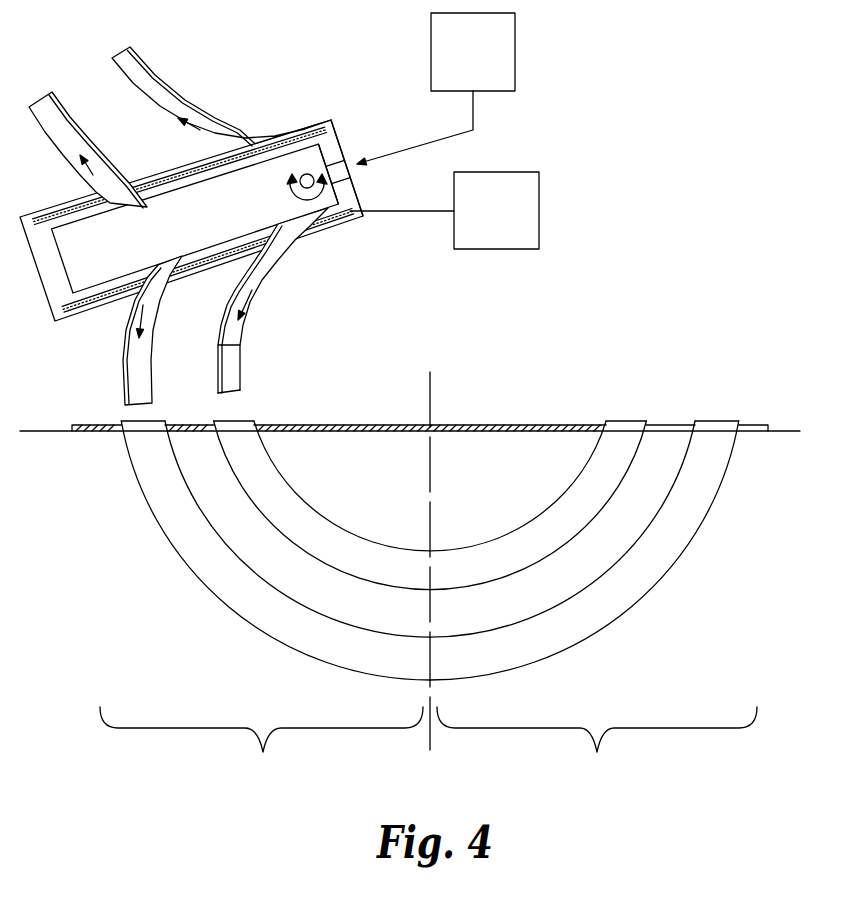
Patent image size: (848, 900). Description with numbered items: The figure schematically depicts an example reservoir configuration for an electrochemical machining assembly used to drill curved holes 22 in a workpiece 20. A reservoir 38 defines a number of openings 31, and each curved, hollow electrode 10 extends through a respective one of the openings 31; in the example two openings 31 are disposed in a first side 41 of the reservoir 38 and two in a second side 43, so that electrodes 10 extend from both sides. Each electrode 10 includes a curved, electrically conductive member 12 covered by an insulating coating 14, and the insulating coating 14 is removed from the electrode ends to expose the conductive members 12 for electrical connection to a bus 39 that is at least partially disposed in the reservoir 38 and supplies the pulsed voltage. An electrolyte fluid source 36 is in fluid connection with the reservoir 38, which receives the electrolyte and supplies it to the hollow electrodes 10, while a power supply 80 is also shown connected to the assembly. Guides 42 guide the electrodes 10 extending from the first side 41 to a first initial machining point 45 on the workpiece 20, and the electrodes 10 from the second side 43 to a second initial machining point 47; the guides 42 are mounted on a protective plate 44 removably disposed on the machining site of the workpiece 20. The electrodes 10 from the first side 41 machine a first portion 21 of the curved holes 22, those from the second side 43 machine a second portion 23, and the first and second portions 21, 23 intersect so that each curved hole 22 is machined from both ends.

The curved electrode 10 is at (270, 322).
The curved, electrically conductive member 12 is at (225, 393).
The insulating coating 14 is at (243, 343).
The workpiece 20 is at (410, 561).
The first portion of curved hole 21 is at (261, 746).
The curved hole 22 is at (706, 497).
The second portion of curved hole 23 is at (597, 746).
The openings 31 is at (218, 137).
The electrolyte fluid source 36 is at (436, 89).
The reservoir 38 is at (336, 123).
The bus 39 is at (340, 222).
The first side of reservoir 41 is at (308, 238).
The guide 42 is at (722, 423).
The second side of reservoir 43 is at (176, 168).
The protective plate 44 is at (560, 424).
The first initial machining point 45 is at (130, 448).
The second initial machining point 47 is at (708, 436).
The power supply 80 is at (444, 210).